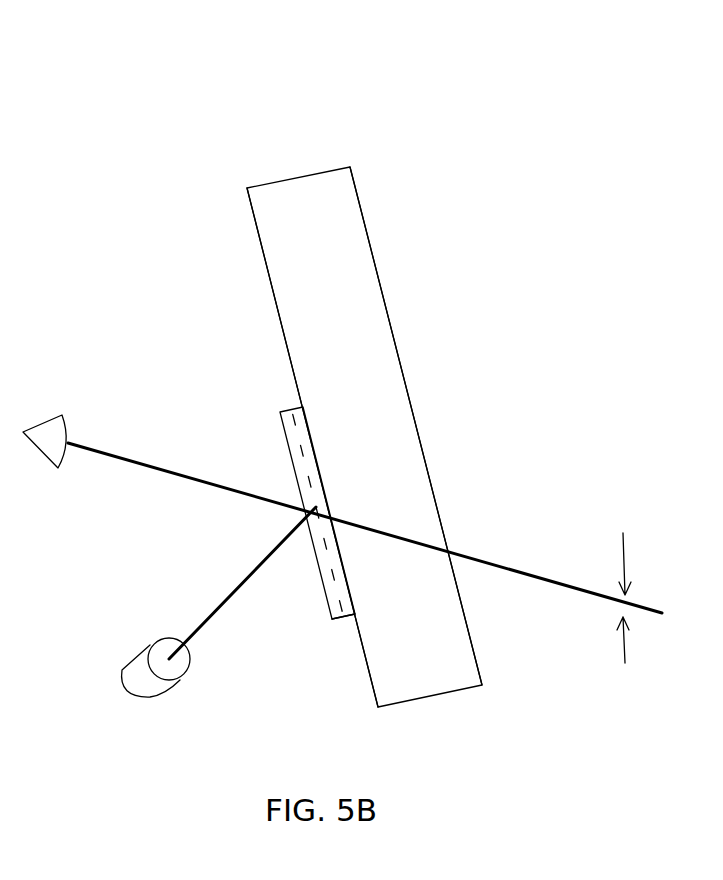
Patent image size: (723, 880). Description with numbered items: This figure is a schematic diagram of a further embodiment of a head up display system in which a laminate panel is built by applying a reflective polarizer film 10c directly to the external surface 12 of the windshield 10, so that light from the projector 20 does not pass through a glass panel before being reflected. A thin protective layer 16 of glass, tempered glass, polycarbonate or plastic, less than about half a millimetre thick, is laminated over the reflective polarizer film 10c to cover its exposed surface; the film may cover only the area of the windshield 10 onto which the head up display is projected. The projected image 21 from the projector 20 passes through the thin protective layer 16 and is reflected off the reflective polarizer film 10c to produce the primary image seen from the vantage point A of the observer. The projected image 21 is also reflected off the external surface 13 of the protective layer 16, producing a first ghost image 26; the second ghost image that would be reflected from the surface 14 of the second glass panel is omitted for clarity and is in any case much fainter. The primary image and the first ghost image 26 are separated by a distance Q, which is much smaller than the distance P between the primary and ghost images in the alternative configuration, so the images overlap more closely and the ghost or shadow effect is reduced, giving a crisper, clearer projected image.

The windshield 10 is at (335, 141).
The external surface 12 is at (257, 225).
The surface of the second glass panel 14 is at (366, 212).
The reflective polarizer film 10c is at (285, 420).
The external surface of the protective layer 13 is at (318, 568).
The protective layer 16 is at (330, 616).
The first ghost image 26 is at (157, 473).
The projected image 21 is at (228, 603).
The projector 20 is at (157, 695).
The vantage point A is at (37, 428).
The distance P is at (12, 574).
The distance Q is at (653, 607).